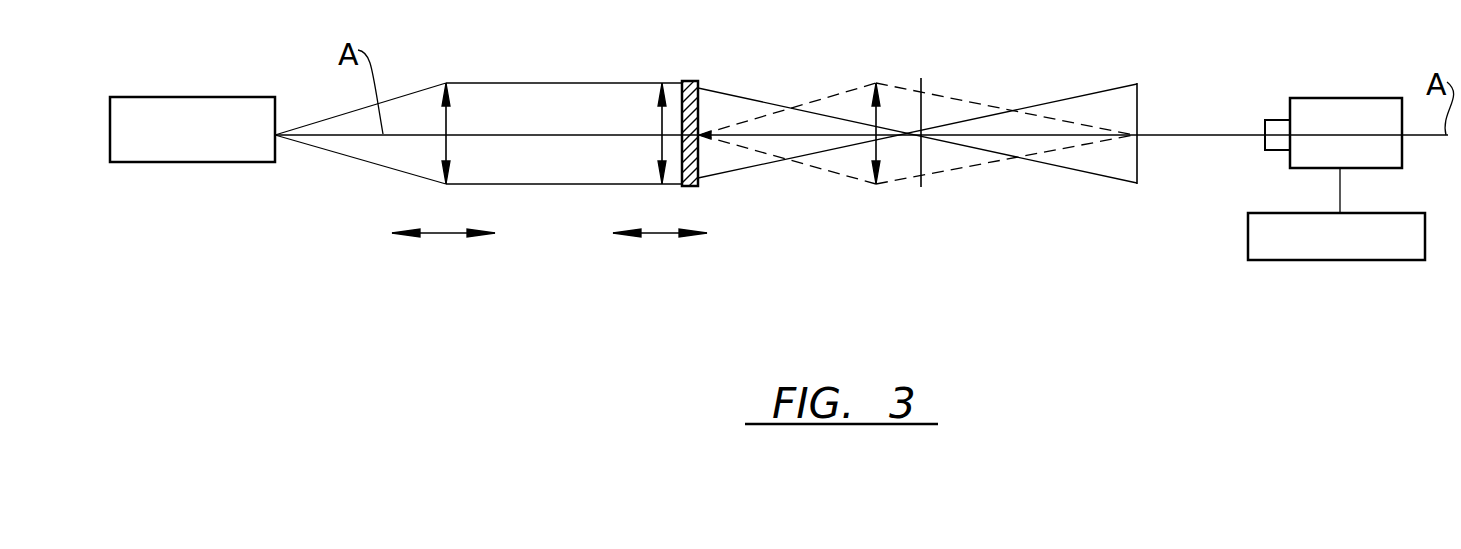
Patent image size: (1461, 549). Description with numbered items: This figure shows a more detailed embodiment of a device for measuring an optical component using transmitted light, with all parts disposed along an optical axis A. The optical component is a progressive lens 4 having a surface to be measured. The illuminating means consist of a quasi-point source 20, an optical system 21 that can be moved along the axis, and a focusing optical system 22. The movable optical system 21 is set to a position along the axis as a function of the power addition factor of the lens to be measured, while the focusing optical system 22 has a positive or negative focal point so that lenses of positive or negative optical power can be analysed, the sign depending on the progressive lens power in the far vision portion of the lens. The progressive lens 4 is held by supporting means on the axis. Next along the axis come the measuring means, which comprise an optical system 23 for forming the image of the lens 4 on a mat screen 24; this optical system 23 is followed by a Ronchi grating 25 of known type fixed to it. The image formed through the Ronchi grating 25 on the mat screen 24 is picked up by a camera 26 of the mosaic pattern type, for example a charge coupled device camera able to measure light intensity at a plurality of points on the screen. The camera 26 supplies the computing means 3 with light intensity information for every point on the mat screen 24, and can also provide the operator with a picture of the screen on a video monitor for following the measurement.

The quasi-point source 20 is at (178, 162).
The movable optical system 21 is at (447, 121).
The focusing optical system 22 is at (660, 121).
The progressive lens 4 is at (697, 194).
The optical system 23 is at (877, 118).
The Ronchi grating 25 is at (923, 110).
The mat screen 24 is at (1140, 102).
The camera 26 is at (1317, 97).
The computing means 3 is at (1268, 260).